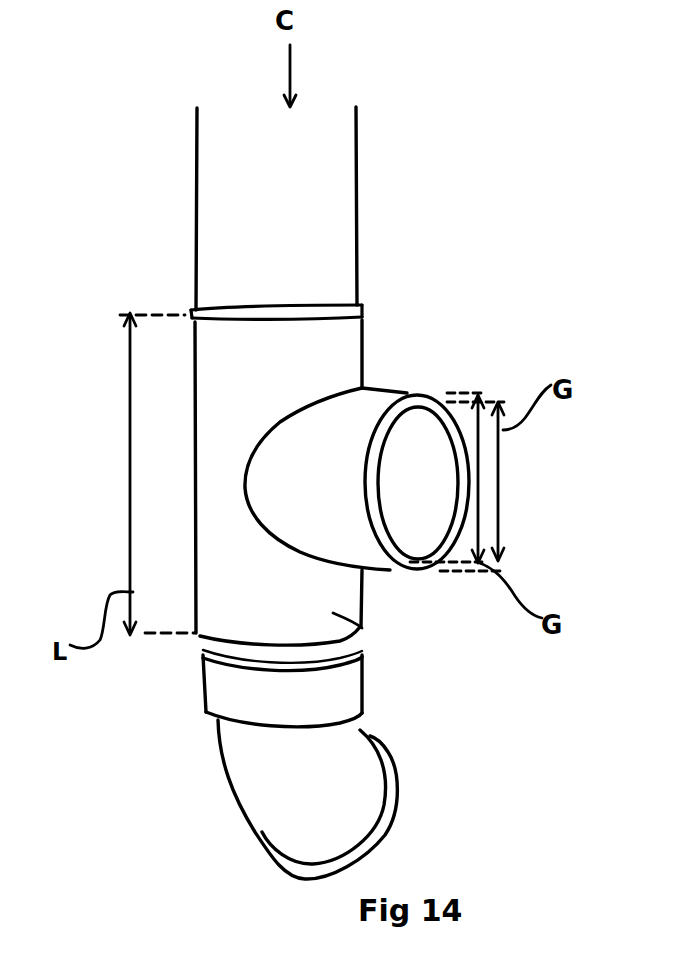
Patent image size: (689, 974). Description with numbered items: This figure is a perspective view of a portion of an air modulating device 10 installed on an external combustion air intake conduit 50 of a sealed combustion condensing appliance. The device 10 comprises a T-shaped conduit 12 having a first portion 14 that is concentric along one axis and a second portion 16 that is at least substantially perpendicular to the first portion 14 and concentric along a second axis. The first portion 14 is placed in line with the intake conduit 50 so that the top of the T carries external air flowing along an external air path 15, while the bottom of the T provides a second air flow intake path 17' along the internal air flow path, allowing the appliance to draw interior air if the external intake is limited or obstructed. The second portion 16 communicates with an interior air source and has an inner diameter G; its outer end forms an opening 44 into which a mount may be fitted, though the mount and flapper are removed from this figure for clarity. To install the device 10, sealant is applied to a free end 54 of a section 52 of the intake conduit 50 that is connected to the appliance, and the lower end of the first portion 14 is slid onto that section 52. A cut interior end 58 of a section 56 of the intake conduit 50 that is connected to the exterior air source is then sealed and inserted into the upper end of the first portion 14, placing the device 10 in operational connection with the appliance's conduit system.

The air modulating device 10 is at (480, 306).
The T-shaped conduit 12 is at (370, 641).
The first portion 14 is at (350, 336).
The external air path 15 is at (259, 107).
The second portion 16 is at (383, 403).
The second air flow intake path 17' is at (419, 468).
The opening 44 is at (423, 497).
The intake conduit 50 is at (151, 168).
The section of intake conduit 52 is at (207, 649).
The free end 54 is at (369, 645).
The section of intake conduit 56 is at (211, 297).
The cut interior end 58 is at (377, 292).